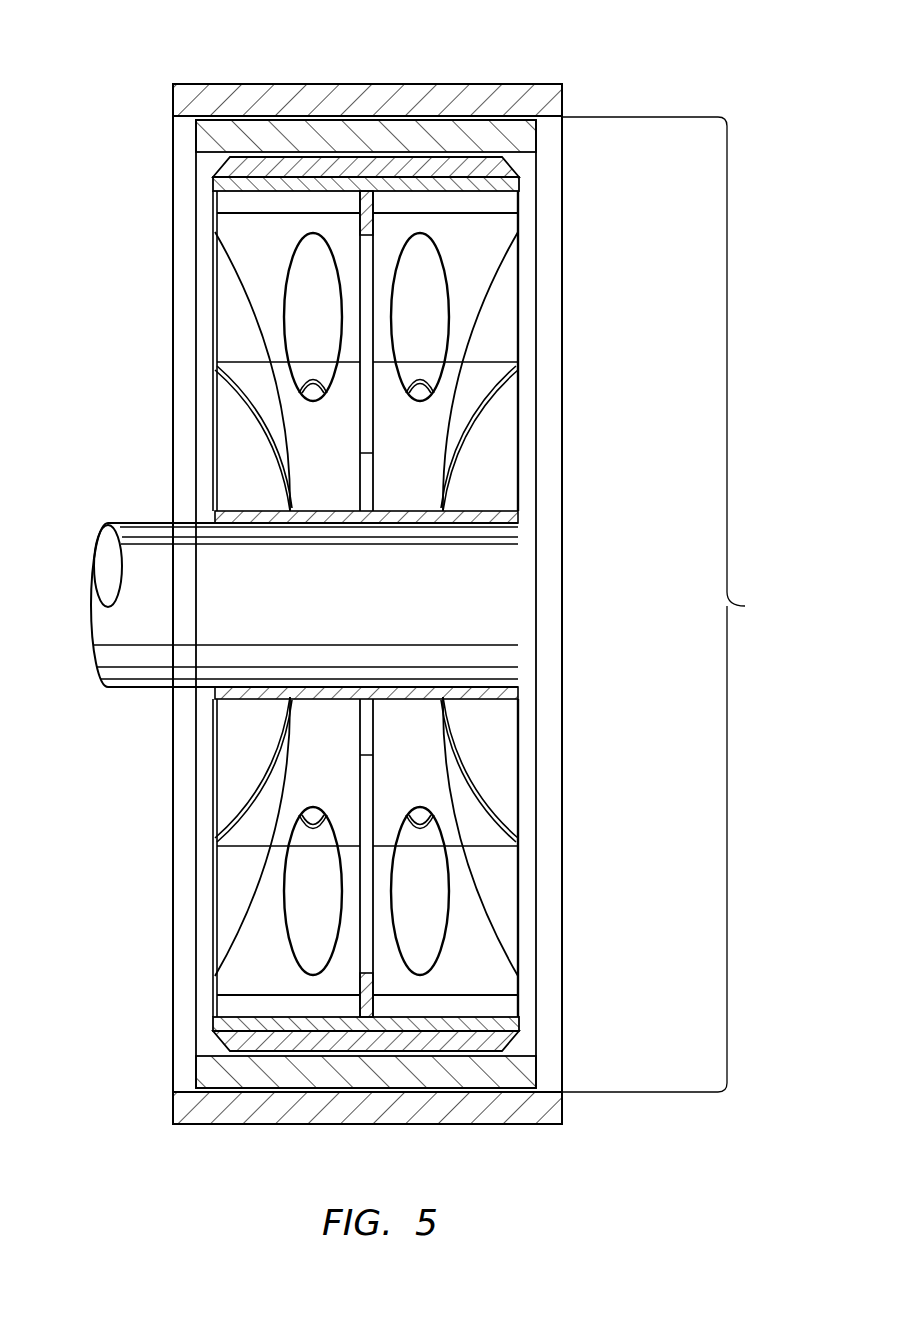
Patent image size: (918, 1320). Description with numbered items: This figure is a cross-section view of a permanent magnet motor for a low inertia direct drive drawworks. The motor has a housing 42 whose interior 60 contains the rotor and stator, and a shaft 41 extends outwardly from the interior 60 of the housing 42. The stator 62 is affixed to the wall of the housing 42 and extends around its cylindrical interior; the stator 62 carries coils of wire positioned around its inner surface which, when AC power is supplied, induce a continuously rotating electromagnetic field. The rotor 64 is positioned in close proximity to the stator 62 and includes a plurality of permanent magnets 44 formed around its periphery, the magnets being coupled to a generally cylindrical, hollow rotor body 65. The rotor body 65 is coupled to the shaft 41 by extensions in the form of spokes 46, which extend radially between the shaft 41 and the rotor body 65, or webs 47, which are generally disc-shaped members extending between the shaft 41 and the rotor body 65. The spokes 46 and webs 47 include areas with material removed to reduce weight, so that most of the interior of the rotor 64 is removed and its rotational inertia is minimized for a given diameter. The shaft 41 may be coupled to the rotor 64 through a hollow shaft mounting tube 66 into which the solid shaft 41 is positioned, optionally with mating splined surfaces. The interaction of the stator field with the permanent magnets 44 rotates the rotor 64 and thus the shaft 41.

The shaft 41 is at (128, 522).
The housing 42 is at (533, 97).
The permanent magnets 44 is at (498, 168).
The spokes 46 is at (417, 423).
The webs 47 is at (367, 337).
The interior 60 is at (745, 606).
The stator 62 is at (520, 143).
The rotor 64 is at (518, 480).
The rotor body 65 is at (503, 1024).
The shaft mounting tube 66 is at (477, 516).